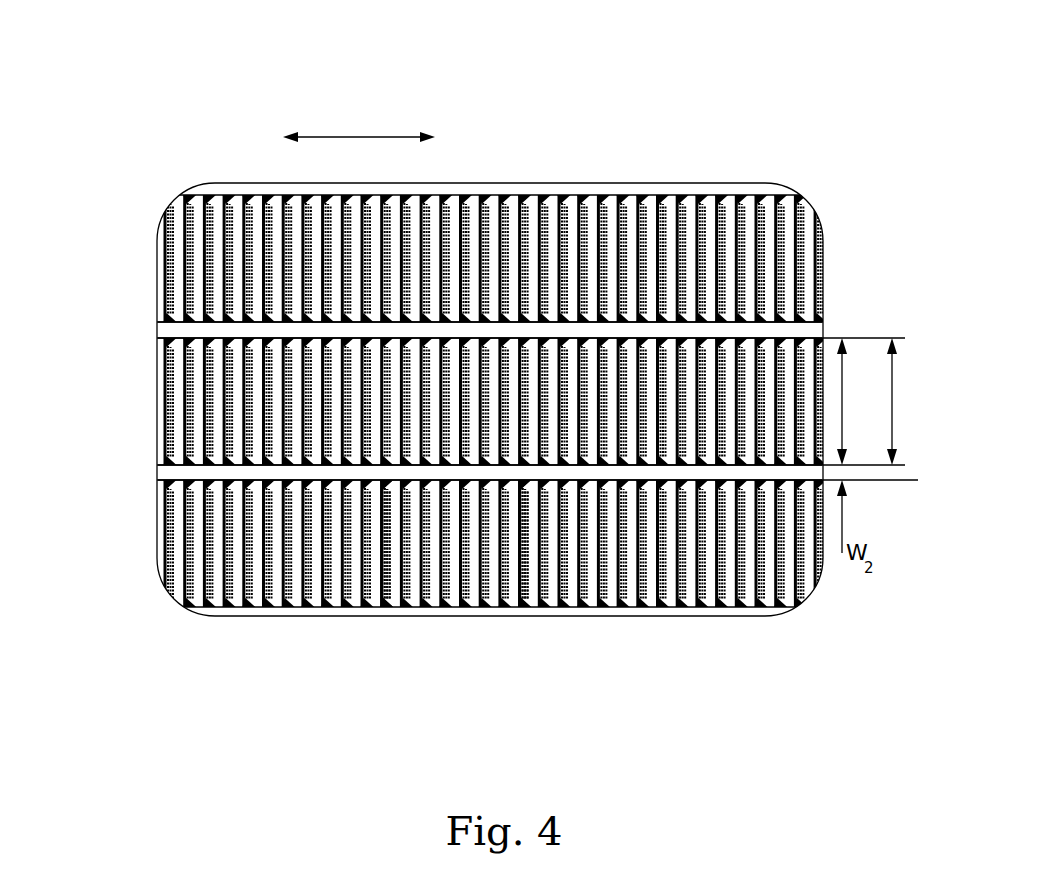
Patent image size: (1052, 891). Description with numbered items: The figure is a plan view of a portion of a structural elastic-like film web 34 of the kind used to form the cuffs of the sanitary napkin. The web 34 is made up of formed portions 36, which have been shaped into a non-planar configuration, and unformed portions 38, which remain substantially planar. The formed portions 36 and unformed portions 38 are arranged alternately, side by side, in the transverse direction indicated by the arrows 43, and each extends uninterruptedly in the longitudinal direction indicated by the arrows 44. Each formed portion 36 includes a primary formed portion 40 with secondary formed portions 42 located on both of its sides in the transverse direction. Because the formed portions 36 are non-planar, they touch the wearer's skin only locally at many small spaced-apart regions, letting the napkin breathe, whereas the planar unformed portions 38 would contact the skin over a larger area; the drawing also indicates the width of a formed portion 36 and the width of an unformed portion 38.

The web 34 is at (574, 152).
The formed portions 36 is at (492, 459).
The unformed portions 38 is at (167, 472).
The primary formed portion 40 is at (523, 603).
The secondary formed portions 42 is at (393, 603).
The arrows indicating the transverse direction 43 is at (874, 409).
The arrows indicating the longitudinal direction 44 is at (359, 125).